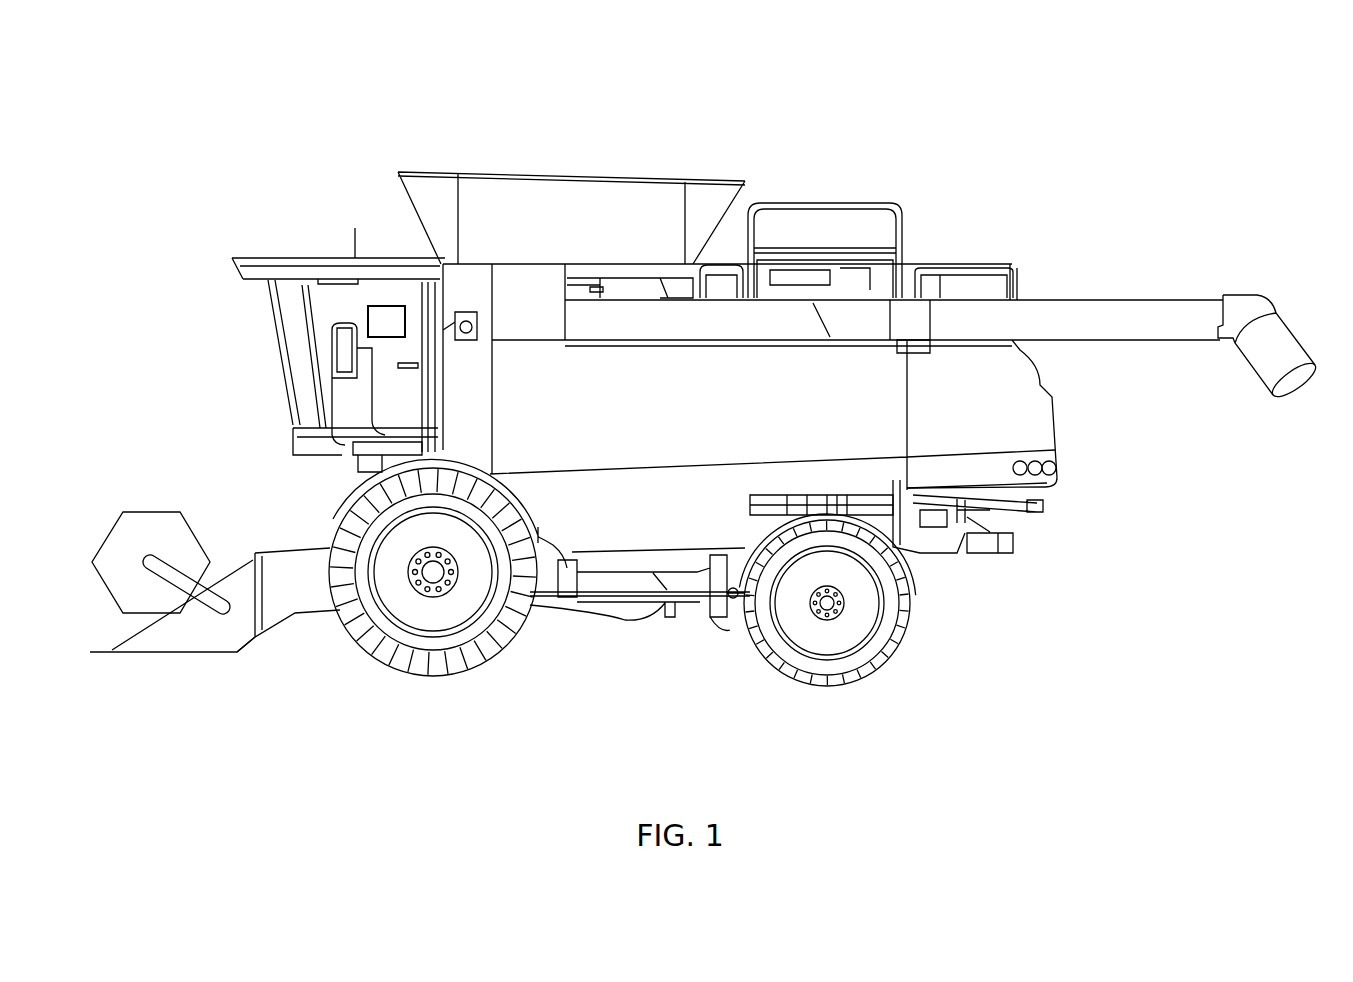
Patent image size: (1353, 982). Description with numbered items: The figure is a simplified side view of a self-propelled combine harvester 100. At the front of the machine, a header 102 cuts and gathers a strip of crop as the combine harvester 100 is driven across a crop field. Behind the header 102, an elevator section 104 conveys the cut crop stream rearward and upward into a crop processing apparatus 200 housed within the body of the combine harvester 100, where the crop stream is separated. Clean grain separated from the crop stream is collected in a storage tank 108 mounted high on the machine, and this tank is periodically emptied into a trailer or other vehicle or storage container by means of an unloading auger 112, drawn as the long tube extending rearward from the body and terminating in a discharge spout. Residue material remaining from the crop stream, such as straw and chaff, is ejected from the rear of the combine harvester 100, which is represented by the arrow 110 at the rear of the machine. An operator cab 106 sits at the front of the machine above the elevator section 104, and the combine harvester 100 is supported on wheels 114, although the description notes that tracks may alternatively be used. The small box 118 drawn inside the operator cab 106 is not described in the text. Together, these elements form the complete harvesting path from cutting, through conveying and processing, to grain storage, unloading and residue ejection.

The combine harvester 100 is at (277, 172).
The header 102 is at (180, 652).
The elevator section 104 is at (298, 612).
The operator cab 106 is at (300, 400).
The storage tank 108 is at (638, 174).
The arrow 110 is at (1085, 563).
The unloading auger 112 is at (855, 327).
The wheels 114 is at (500, 627).
The control unit 118 is at (395, 317).
The crop processing apparatus 200 is at (700, 533).